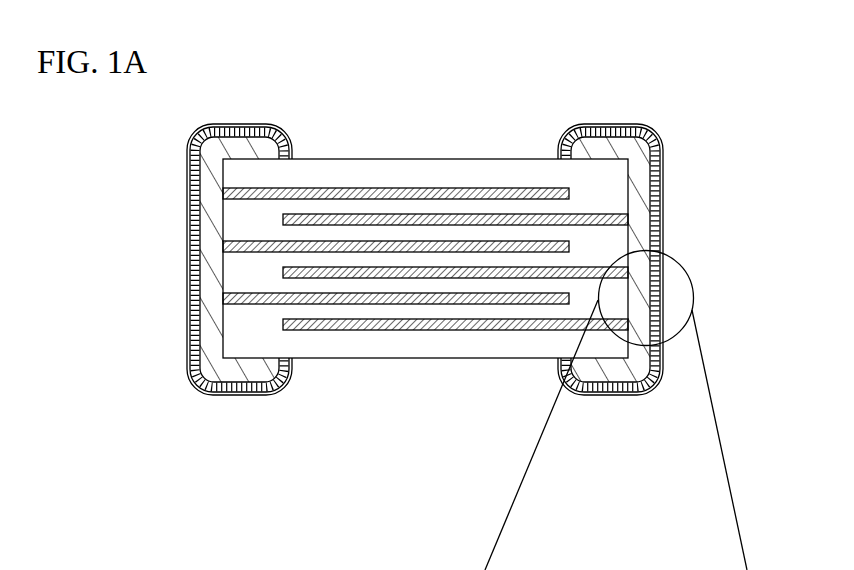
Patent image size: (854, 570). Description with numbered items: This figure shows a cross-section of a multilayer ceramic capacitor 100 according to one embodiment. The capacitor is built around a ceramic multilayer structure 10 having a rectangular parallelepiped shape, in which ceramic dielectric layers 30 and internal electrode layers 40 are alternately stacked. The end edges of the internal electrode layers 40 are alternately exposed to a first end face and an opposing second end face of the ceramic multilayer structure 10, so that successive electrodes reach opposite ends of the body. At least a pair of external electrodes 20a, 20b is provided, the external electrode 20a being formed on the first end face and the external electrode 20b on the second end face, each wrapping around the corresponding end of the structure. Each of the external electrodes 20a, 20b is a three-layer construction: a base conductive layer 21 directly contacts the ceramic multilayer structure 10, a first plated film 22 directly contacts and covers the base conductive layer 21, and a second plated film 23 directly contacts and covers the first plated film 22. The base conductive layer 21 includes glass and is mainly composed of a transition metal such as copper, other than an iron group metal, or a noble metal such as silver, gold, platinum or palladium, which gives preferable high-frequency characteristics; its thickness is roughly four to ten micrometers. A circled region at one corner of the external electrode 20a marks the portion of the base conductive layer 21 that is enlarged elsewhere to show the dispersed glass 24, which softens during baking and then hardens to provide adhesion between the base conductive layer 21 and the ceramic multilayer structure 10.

The multilayer ceramic capacitor 100 is at (698, 57).
The ceramic multilayer structure 10 is at (425, 224).
The ceramic dielectric layer 30 is at (333, 207).
The internal electrode layer 40 is at (410, 226).
The external electrode 20a is at (745, 143).
The external electrode 20b is at (105, 143).
The base conductive layer 21 is at (190, 148).
The first plated film 22 is at (193, 203).
The second plated film 23 is at (202, 239).
The glass 24 is at (616, 411).